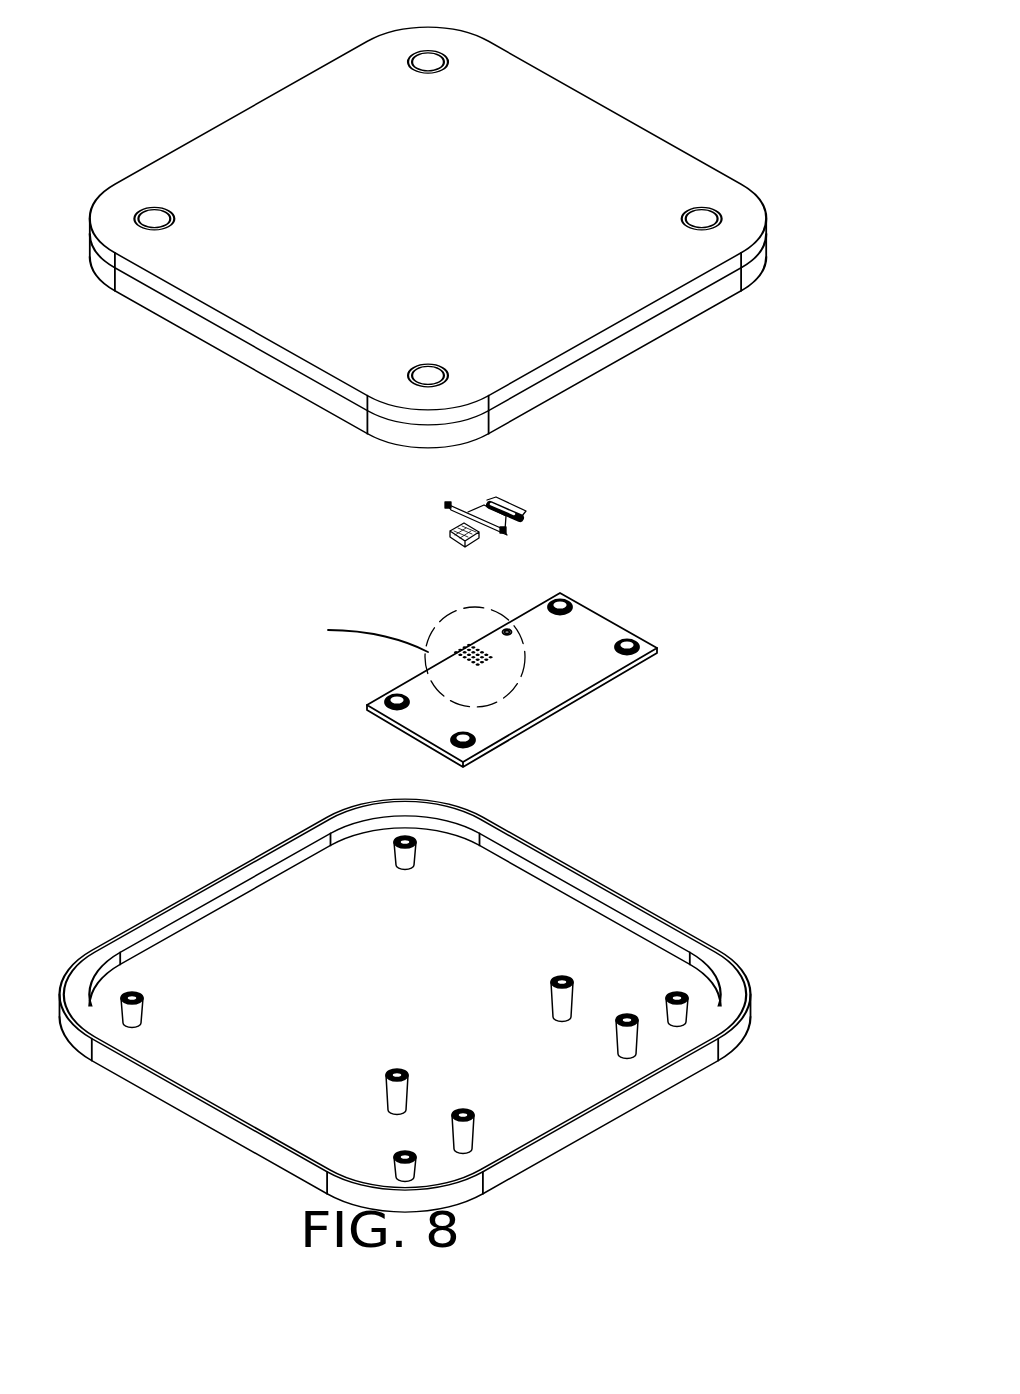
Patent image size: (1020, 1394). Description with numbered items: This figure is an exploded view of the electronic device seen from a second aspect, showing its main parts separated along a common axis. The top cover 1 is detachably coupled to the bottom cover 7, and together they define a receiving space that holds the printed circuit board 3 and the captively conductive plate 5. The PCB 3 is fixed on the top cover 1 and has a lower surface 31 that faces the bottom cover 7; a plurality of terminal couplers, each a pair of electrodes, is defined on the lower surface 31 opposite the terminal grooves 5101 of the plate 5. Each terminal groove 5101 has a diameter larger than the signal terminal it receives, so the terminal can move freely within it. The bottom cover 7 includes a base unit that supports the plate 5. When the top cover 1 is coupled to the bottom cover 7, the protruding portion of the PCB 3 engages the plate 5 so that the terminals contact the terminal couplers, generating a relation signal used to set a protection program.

The bottom cover 7 is at (590, 137).
The captively conductive plate 5 is at (474, 530).
The terminal groove 5101 is at (450, 535).
The printed circuit board 3 is at (495, 675).
The lower surface 31 is at (553, 690).
The top cover 1 is at (523, 887).